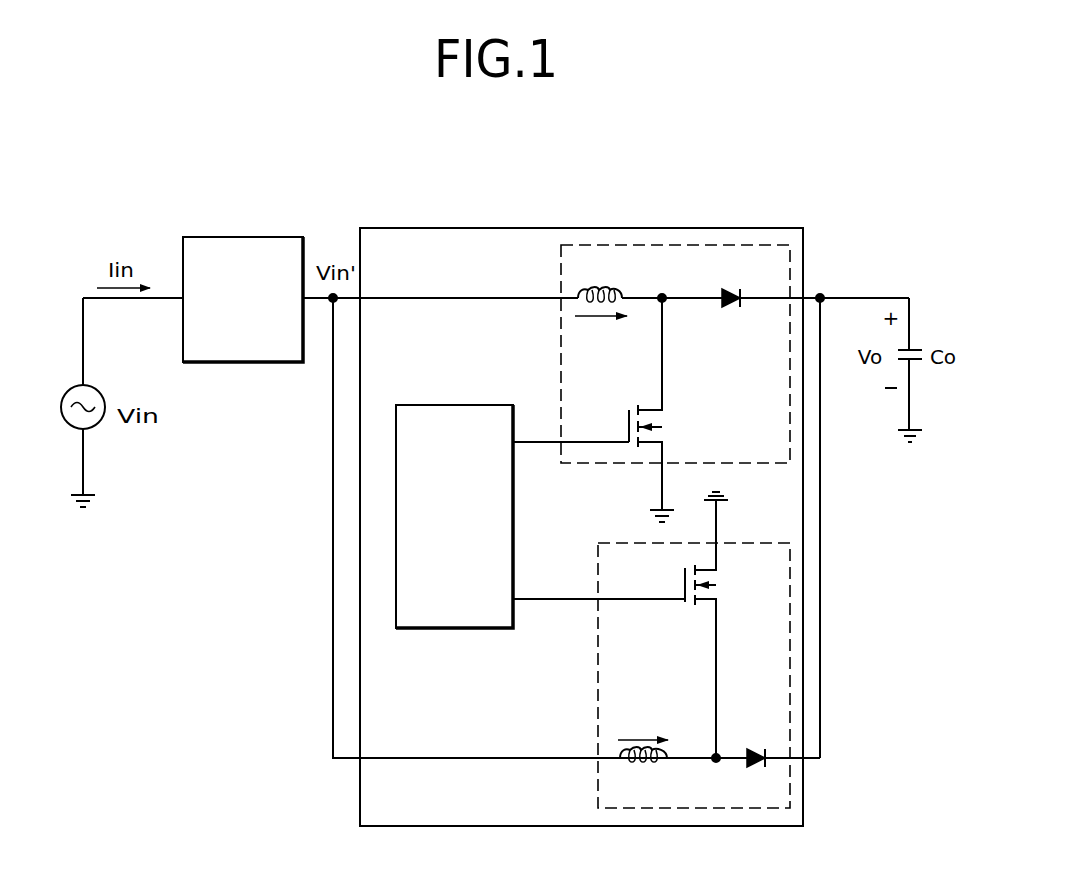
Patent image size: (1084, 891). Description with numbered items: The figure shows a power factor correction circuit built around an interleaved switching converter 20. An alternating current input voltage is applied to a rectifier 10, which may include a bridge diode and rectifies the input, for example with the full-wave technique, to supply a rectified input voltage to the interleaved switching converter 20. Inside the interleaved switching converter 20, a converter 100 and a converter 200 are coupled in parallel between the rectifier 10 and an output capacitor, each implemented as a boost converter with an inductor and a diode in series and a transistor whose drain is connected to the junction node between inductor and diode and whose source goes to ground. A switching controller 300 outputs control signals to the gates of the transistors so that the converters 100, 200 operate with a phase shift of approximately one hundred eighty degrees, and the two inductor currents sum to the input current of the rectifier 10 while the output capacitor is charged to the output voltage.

The rectifier 10 is at (262, 237).
The interleaved switching converter 20 is at (750, 228).
The converter 100 is at (561, 348).
The converter 200 is at (598, 720).
The switching controller 300 is at (455, 628).